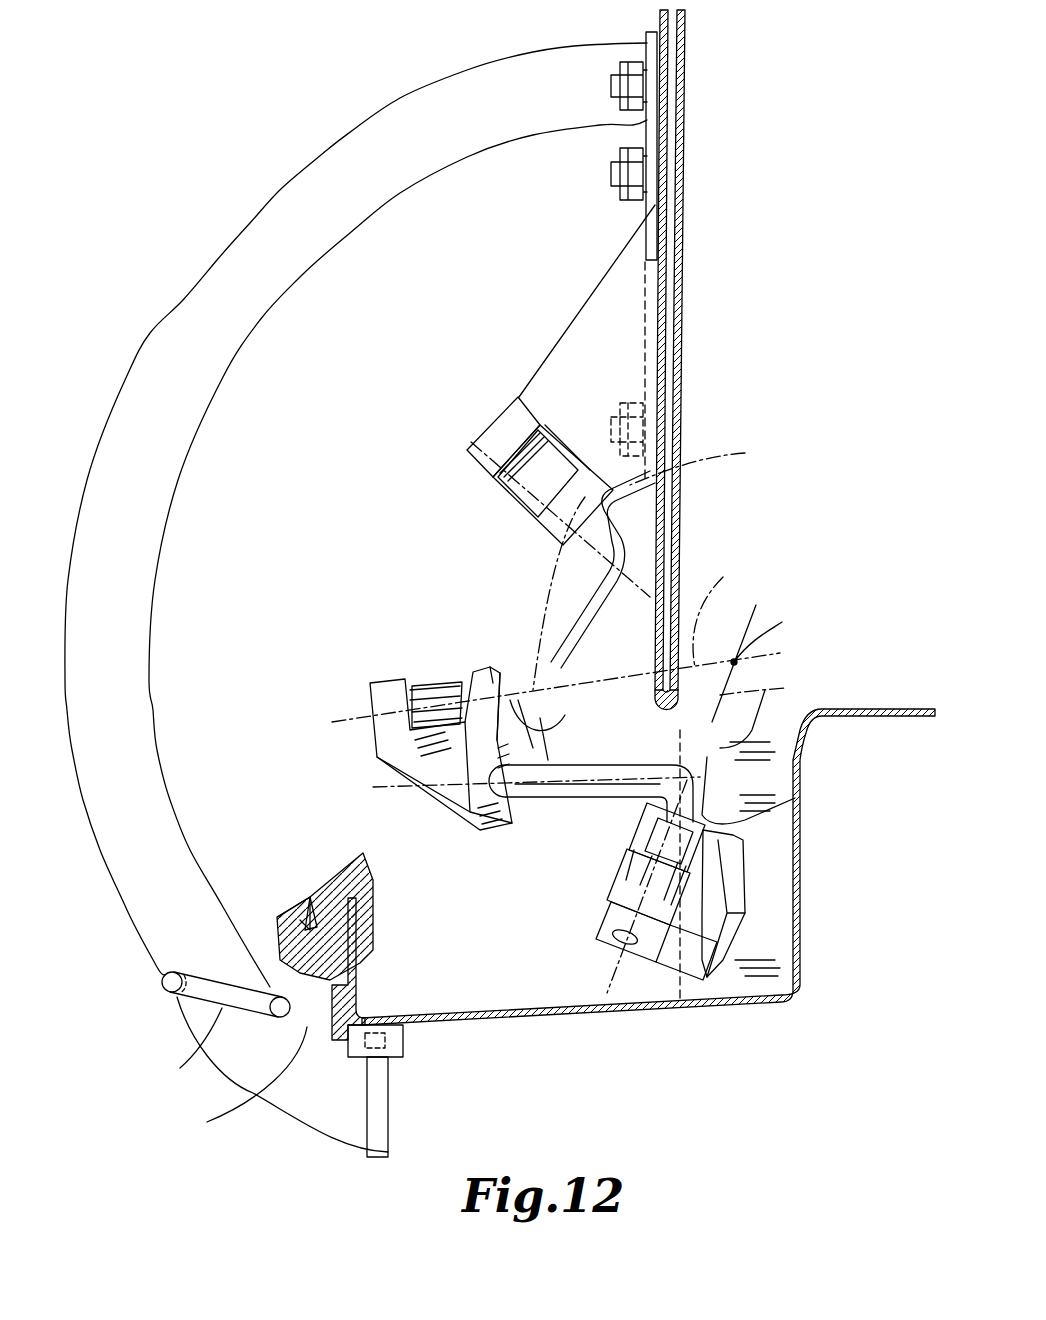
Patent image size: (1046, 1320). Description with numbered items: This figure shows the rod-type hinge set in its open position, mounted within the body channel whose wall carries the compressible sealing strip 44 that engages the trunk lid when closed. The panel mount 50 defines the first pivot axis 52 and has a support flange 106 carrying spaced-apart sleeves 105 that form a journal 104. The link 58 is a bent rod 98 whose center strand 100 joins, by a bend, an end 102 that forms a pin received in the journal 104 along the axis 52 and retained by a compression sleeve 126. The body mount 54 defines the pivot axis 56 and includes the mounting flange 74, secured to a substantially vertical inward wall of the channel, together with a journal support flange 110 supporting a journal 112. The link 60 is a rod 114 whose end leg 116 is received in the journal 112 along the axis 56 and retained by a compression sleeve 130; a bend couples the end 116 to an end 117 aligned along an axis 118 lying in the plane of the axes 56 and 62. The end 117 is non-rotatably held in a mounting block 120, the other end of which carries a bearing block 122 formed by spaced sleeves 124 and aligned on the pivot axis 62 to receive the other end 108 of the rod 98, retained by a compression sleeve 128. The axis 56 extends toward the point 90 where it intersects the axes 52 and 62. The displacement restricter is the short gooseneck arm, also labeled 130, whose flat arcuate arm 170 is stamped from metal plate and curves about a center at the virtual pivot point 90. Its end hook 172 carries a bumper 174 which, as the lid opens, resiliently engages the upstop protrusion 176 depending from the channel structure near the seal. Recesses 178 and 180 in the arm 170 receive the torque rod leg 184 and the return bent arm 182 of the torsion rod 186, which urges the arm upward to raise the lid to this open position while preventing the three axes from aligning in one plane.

The compressible sealing strip 44 is at (372, 897).
The panel mount 50 is at (516, 429).
The first pivot axis 52 is at (487, 415).
The body mount 54 is at (748, 936).
The pivot axis 56 is at (750, 668).
The link 58 is at (548, 620).
The link 60 is at (555, 815).
The pivot axis 62 is at (712, 606).
The mounting flange 74 is at (745, 870).
The intersection point 90 is at (760, 622).
The bent rod 98 is at (563, 600).
The center strand 100 is at (578, 615).
The rod end 102 is at (664, 516).
The journal 104 is at (468, 457).
The sleeves 105 is at (540, 524).
The support flange 106 is at (548, 392).
The rod end 108 is at (540, 728).
The journal support flange 110 is at (629, 979).
The journal 112 is at (604, 932).
The rod 114 is at (536, 791).
The end leg 116 is at (770, 800).
The rod end 117 is at (545, 772).
The axis 118 is at (380, 802).
The mounting block 120 is at (498, 840).
The bearing block 122 is at (357, 728).
The spaced sleeves 124 is at (376, 681).
The compression sleeve 126 is at (470, 442).
The compression sleeve 128 is at (422, 688).
The compression sleeve / gooseneck arm 130 is at (362, 130).
The flat arcuate arm 170 is at (183, 860).
The hook 172 is at (405, 1042).
The bumper 174 is at (392, 1078).
The upstop protrusion 176 is at (358, 990).
The recess 178 is at (298, 1115).
The recess 180 is at (165, 990).
The return bent arm 182 is at (200, 1046).
The torque rod leg 184 is at (160, 977).
The torsion rod 186 is at (290, 1050).